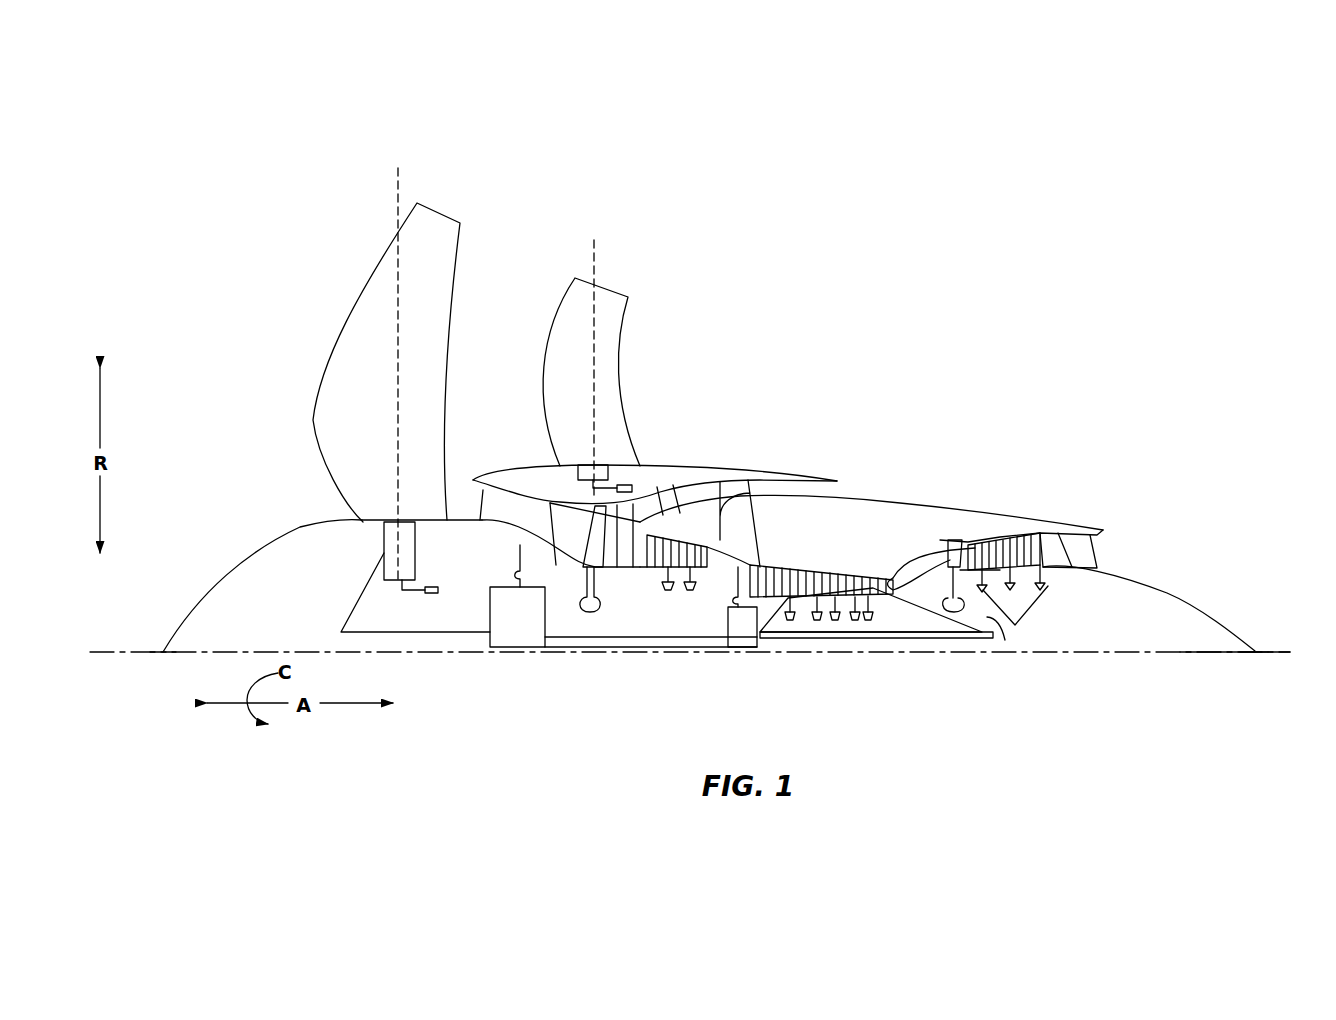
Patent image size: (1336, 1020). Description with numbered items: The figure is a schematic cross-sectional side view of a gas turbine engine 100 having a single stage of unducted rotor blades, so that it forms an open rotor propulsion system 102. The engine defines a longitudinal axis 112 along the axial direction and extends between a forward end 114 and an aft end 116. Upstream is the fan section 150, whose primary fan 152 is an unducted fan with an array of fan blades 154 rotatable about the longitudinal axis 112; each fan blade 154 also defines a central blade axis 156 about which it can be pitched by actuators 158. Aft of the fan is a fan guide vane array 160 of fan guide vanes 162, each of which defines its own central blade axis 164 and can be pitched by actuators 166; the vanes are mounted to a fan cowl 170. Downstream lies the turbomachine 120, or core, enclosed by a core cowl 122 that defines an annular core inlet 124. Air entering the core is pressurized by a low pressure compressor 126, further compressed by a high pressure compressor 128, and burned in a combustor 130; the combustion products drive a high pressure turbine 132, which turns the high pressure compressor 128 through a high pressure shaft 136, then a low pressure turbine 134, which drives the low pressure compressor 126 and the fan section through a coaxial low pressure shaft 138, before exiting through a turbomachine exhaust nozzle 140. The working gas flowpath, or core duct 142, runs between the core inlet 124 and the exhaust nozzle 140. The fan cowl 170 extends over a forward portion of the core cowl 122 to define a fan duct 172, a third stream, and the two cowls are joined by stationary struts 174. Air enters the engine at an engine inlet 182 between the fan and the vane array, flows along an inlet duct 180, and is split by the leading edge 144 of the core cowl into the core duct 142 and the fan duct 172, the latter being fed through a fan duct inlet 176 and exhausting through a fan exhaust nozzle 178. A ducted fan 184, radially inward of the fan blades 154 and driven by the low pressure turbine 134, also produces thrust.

The gas turbine engine 100 is at (776, 225).
The open rotor propulsion system 102 is at (318, 138).
The longitudinal axis 112 is at (1283, 656).
The forward end 114 is at (163, 650).
The aft end 116 is at (1253, 650).
The turbomachine 120 is at (915, 563).
The core cowl 122 is at (858, 558).
The core inlet 124 is at (640, 558).
The low pressure compressor 126 is at (680, 585).
The high pressure compressor 128 is at (846, 607).
The combustor 130 is at (900, 592).
The high pressure turbine 132 is at (963, 534).
The low pressure turbine 134 is at (1023, 530).
The high pressure shaft 136 is at (1000, 640).
The low pressure shaft 138 is at (348, 600).
The turbomachine exhaust nozzle 140 is at (1080, 548).
The core duct 142 is at (958, 545).
The leading edge 144 is at (656, 595).
The fan section 150 is at (265, 257).
The fan 152 is at (335, 362).
The fan blades 154 is at (362, 312).
The central blade axis 156 is at (398, 190).
The actuators 158 is at (427, 587).
The fan guide vane array 160 is at (517, 306).
The fan guide vanes 162 is at (612, 365).
The central blade axis 164 is at (594, 270).
The actuators 166 is at (634, 482).
The fan cowl 170 is at (671, 477).
The fan duct 172 is at (700, 487).
The stationary struts 174 is at (743, 478).
The fan duct inlet 176 is at (643, 520).
The fan exhaust nozzle 178 is at (836, 483).
The inlet duct 180 is at (567, 550).
The engine inlet 182 is at (470, 503).
The ducted fan 184 is at (590, 518).